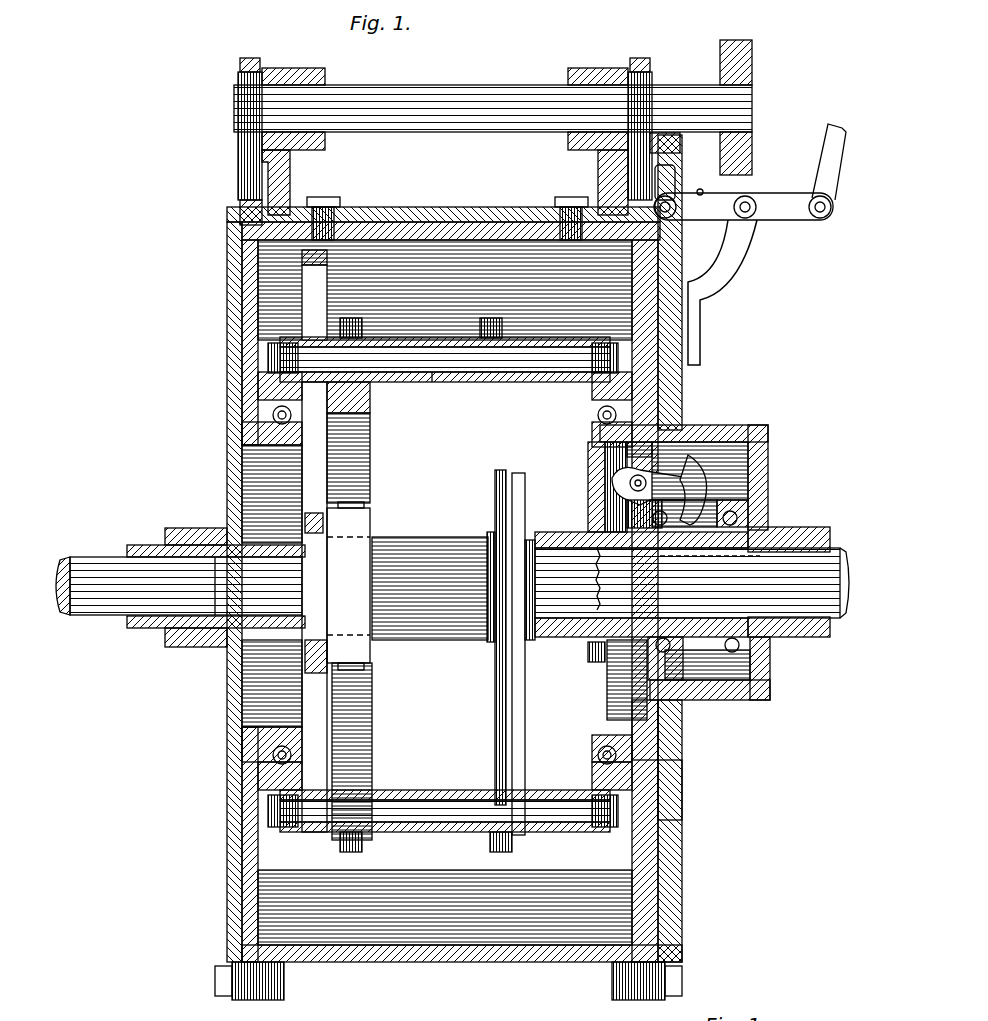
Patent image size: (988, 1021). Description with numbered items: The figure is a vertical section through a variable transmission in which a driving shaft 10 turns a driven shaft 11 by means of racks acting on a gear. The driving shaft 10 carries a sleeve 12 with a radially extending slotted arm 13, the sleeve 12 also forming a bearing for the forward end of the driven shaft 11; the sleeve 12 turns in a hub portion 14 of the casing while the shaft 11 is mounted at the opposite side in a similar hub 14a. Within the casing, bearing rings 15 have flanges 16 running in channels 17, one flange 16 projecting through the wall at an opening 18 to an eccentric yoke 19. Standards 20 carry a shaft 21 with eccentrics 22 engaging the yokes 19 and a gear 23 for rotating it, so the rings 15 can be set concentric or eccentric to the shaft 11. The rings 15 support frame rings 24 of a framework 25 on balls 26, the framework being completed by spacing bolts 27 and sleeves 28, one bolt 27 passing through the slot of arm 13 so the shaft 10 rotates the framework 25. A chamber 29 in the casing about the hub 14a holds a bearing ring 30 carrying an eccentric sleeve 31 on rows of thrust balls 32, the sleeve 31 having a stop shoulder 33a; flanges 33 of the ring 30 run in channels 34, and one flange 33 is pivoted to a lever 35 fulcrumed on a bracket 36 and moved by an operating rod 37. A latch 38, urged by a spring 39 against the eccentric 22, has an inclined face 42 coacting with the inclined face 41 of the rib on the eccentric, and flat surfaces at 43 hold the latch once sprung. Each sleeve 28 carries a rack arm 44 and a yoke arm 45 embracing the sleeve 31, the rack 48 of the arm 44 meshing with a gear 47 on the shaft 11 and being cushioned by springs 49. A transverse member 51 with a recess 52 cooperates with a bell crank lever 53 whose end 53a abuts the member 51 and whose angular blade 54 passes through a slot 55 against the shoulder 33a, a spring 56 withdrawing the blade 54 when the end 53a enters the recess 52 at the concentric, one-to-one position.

The driving shaft 10 is at (95, 603).
The driven shaft 11 is at (220, 640).
The sleeve 12 is at (160, 545).
The slotted arm 13 is at (305, 318).
The hub portion 14 is at (192, 527).
The hub 14a is at (785, 640).
The bearing ring 15 is at (272, 435).
The flange 16 is at (245, 290).
The channel 17 is at (250, 895).
The opening 18 is at (228, 230).
The eccentric yoke 19 is at (250, 58).
The standard 20 is at (300, 70).
The shaft 21 is at (425, 88).
The eccentric 22 is at (248, 135).
The gear 23 is at (740, 62).
The frame ring 24 is at (270, 385).
The framework 25 is at (436, 392).
The balls 26 is at (272, 412).
The spacing bolt 27 is at (397, 360).
The sleeve 28 is at (462, 382).
The chamber 29 is at (728, 675).
The bearing ring 30 is at (768, 495).
The sleeve 31 is at (558, 532).
The thrust balls 32 is at (770, 528).
The flange 33 is at (665, 760).
The stop shoulder 33a is at (688, 558).
The channel 34 is at (675, 786).
The lever 35 is at (795, 212).
The bracket 36 is at (735, 258).
The operating rod 37 is at (835, 124).
The latch 38 is at (676, 160).
The spring 39 is at (743, 194).
The inclined face 41 is at (600, 156).
The inclined face 42 is at (702, 179).
The flat surfaces 43 is at (668, 170).
The rack arm 44 is at (362, 748).
The yoke arm 45 is at (495, 497).
The gear 47 is at (432, 640).
The rack 48 is at (360, 555).
The spring 49 is at (358, 500).
The transverse member 51 is at (590, 470).
The recess 52 is at (625, 455).
The bell crank lever 53 is at (680, 440).
The end portion 53a is at (612, 470).
The angular blade 54 is at (745, 465).
The slot 55 is at (705, 490).
The spring 56 is at (715, 450).